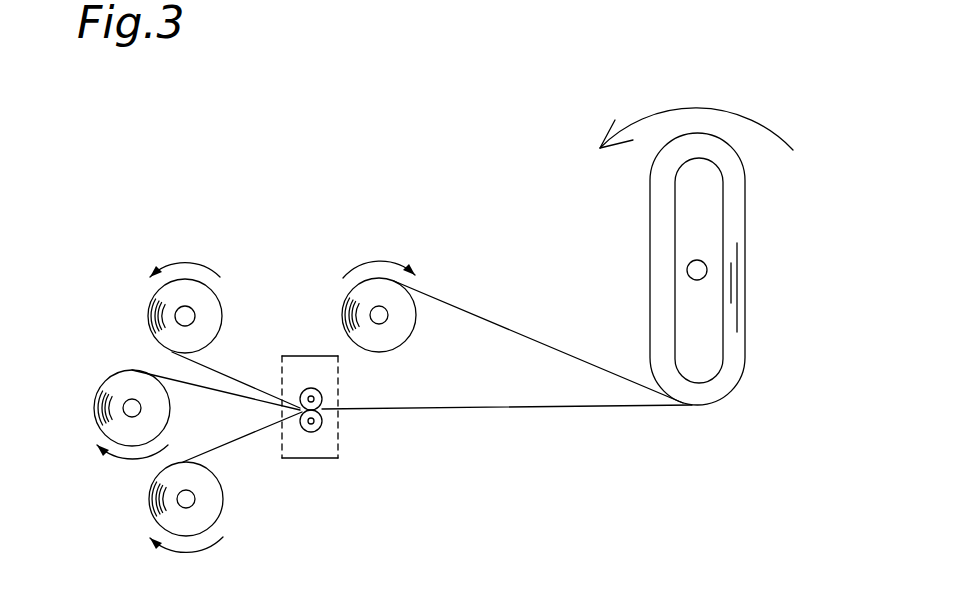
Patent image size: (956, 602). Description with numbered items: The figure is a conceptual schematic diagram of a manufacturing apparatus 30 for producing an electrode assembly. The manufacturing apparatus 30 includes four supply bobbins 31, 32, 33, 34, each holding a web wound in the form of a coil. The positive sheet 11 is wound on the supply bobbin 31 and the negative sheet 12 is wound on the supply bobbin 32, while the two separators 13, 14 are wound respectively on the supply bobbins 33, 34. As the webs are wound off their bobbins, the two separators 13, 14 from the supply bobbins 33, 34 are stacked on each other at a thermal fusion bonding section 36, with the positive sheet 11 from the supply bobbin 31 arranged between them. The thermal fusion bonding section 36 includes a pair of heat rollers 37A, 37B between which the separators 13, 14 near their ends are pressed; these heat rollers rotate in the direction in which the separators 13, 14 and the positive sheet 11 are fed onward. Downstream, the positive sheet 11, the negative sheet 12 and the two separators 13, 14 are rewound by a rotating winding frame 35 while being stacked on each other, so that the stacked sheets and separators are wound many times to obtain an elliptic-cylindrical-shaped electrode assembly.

The manufacturing apparatus 30 is at (176, 186).
The supply bobbin 31 is at (110, 368).
The supply bobbin 32 is at (337, 309).
The supply bobbin 33 is at (224, 298).
The supply bobbin 34 is at (225, 518).
The winding frame 35 is at (750, 313).
The thermal fusion bonding section 36 is at (347, 438).
The heat roller 37A is at (318, 388).
The heat roller 37B is at (318, 429).
The positive sheet 11 is at (203, 387).
The negative sheet 12 is at (467, 309).
The separator 13 is at (230, 377).
The separator 14 is at (242, 437).